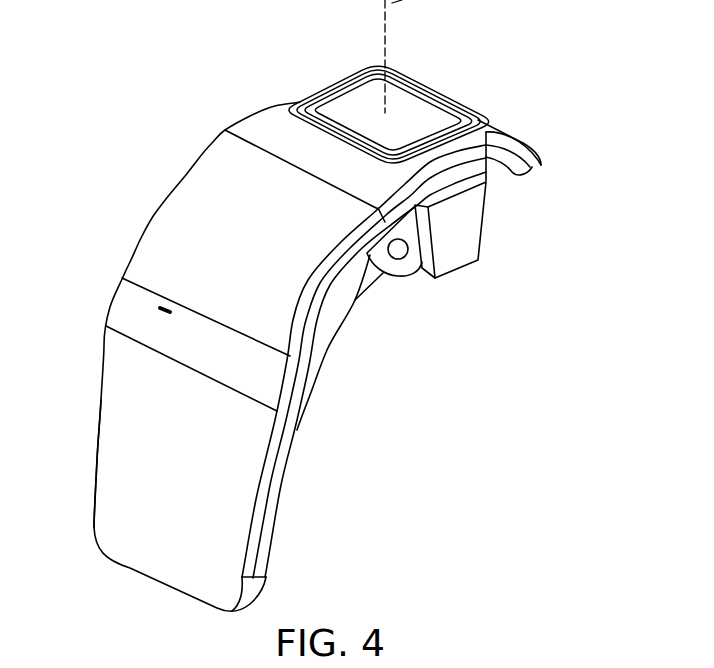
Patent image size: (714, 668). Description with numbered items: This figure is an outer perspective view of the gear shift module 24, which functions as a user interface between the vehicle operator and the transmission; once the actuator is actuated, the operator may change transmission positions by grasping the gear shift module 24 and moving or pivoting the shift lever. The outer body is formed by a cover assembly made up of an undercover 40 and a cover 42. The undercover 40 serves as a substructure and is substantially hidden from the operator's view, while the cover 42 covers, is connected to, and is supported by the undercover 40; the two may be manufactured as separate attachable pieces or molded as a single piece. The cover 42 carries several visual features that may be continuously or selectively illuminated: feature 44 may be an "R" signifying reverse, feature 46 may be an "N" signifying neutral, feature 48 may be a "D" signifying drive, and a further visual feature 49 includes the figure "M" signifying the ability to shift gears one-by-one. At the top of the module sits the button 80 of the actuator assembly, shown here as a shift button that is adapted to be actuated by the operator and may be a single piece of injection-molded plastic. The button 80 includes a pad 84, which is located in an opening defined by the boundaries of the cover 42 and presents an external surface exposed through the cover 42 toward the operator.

The gear shift module 24 is at (555, 87).
The undercover 40 is at (287, 488).
The cover 42 is at (95, 458).
The visual feature 44 is at (277, 202).
The visual feature 46 is at (242, 250).
The visual feature 48 is at (226, 297).
The visual feature 49 is at (166, 260).
The button 80 is at (334, 84).
The pad 84 is at (431, 118).